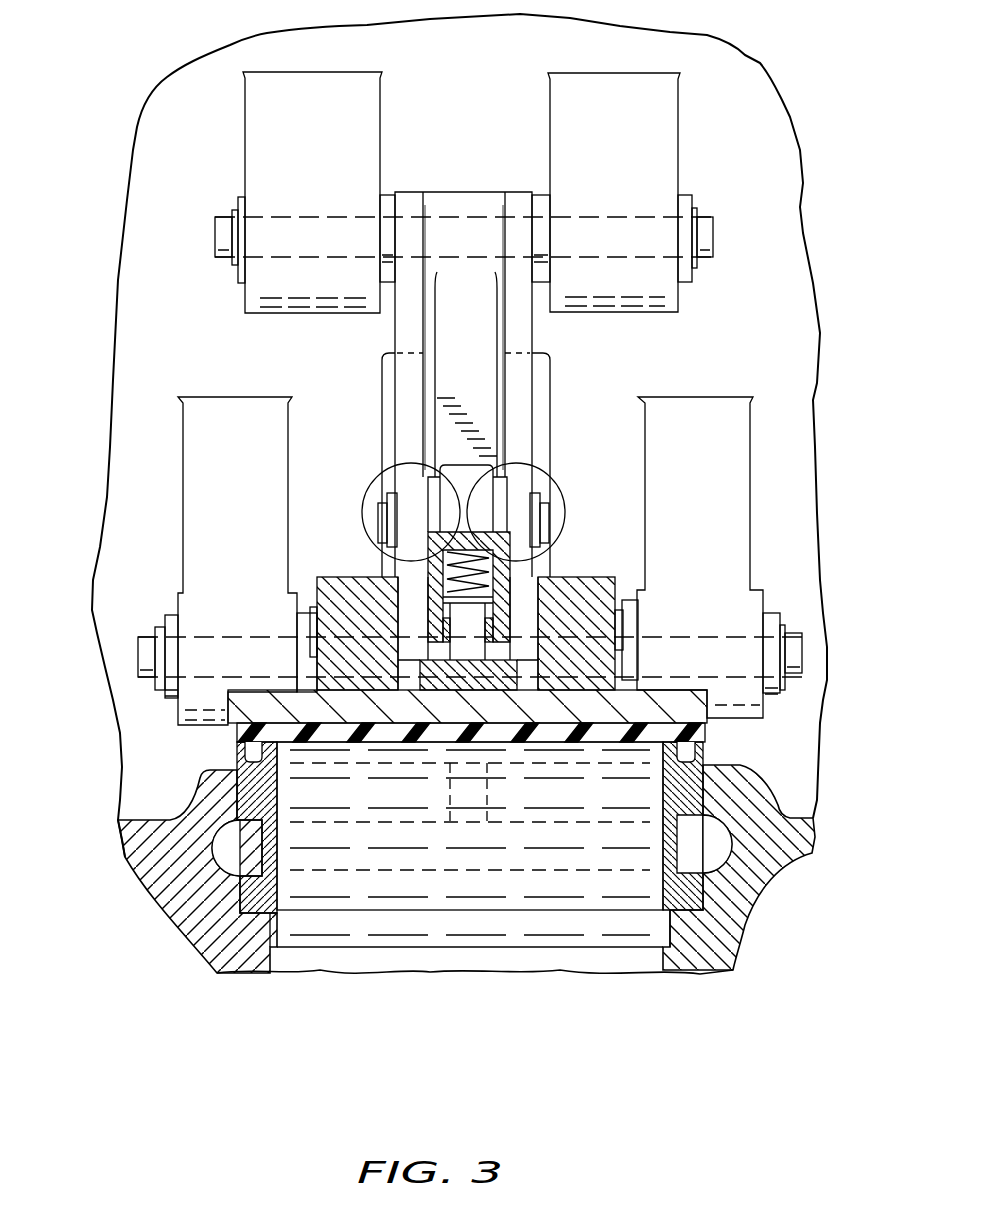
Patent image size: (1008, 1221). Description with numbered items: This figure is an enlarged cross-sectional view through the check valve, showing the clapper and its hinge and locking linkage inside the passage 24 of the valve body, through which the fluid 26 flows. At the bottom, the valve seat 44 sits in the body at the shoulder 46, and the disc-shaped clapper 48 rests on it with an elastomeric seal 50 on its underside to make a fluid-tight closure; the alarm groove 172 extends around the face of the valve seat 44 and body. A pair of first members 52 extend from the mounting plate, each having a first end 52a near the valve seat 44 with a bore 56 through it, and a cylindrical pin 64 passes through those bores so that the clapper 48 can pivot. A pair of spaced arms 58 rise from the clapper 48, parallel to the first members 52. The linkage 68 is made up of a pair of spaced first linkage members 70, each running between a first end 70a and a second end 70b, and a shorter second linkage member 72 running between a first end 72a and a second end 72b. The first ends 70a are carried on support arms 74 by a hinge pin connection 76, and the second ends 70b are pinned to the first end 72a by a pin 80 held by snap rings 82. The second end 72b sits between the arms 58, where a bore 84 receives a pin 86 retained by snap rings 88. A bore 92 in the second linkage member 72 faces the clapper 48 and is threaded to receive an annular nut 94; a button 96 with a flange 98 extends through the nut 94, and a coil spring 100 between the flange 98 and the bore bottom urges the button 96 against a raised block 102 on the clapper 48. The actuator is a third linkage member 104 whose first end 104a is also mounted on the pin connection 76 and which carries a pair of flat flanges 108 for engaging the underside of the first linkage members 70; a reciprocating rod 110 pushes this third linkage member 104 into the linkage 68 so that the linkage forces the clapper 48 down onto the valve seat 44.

The passage 24 is at (790, 250).
The fluid 26 is at (340, 938).
The valve seat 44 is at (695, 890).
The shoulder 46 is at (697, 917).
The clapper 48 is at (703, 705).
The seal 50 is at (238, 725).
The first member 52 is at (254, 439).
The first end 52a is at (203, 588).
The bore 56 is at (168, 680).
The arms 58 is at (360, 577).
The cylindrical pin 64 is at (142, 634).
The linkage 68 is at (110, 237).
The first linkage member 70 is at (508, 329).
The first end 70a is at (518, 192).
The second end 70b is at (412, 513).
The second linkage member 72 is at (512, 560).
The first end 72a is at (497, 490).
The second end 72b is at (708, 640).
The support arms 74 is at (560, 93).
The hinge pin connection 76 is at (712, 228).
The pin 80 is at (385, 525).
The snap rings 82 is at (390, 500).
The bore 84 is at (318, 577).
The pin 86 is at (305, 627).
The snap rings 88 is at (632, 640).
The bore 92 is at (492, 580).
The annular nut 94 is at (488, 640).
The button 96 is at (467, 645).
The flange 98 is at (447, 598).
The coil spring 100 is at (475, 540).
The raised block 102 is at (493, 680).
The third linkage member 104 is at (492, 370).
The first end 104a is at (433, 230).
The flanges 108 is at (382, 360).
The rod 110 is at (385, 470).
The annular groove 172 is at (235, 855).